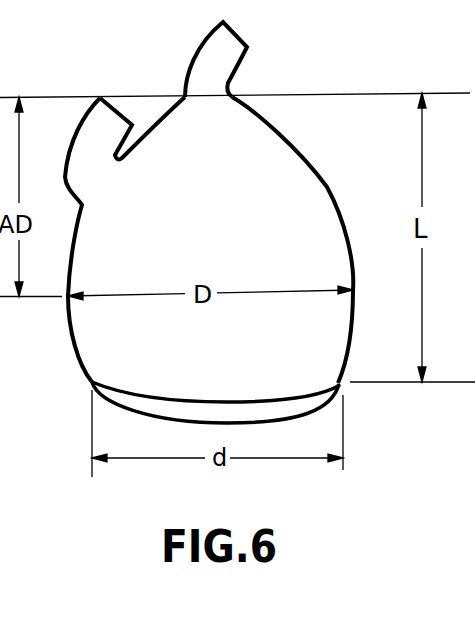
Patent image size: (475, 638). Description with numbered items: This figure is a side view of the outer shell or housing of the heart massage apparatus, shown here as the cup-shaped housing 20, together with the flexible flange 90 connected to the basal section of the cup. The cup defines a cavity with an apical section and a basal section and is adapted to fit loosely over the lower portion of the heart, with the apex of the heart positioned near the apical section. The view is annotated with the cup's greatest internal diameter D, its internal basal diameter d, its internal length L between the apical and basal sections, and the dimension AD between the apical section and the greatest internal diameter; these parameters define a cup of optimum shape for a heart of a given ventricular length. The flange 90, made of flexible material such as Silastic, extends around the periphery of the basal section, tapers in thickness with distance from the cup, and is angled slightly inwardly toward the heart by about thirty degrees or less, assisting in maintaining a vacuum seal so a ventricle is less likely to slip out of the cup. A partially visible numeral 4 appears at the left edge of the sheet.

The container body 20 is at (220, 250).
The flange 90 is at (317, 398).
The partially visible reference numeral 4 is at (11, 388).